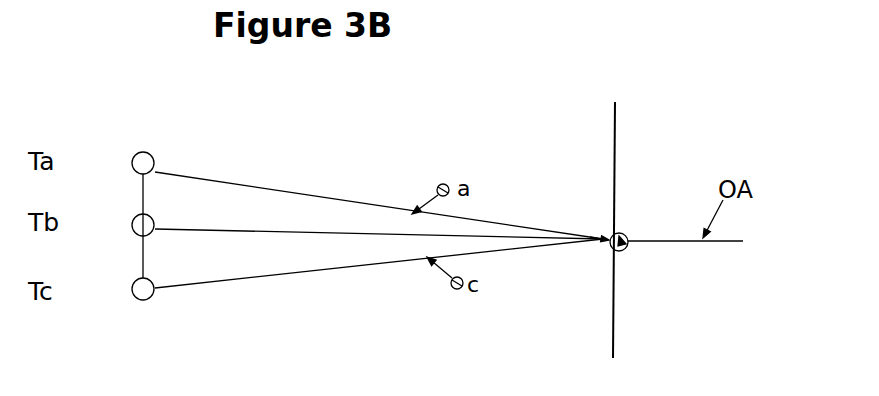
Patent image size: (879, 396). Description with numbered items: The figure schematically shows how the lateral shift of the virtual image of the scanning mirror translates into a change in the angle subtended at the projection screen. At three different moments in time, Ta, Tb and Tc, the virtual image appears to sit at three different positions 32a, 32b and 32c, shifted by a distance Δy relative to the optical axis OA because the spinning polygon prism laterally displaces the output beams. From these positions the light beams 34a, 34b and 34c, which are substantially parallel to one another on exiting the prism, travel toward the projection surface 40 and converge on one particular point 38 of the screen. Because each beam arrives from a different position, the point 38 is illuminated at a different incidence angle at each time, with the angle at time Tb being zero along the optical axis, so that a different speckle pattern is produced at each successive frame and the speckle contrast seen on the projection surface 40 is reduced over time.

The first position of the virtual image 32a is at (117, 163).
The second position of the virtual image 32b is at (117, 224).
The third position of the virtual image 32c is at (117, 291).
The first light beam 34a is at (212, 162).
The second light beam 34b is at (288, 220).
The third light beam 34c is at (283, 278).
The point of the projection screen 38 is at (632, 252).
The projection surface 40 is at (625, 152).